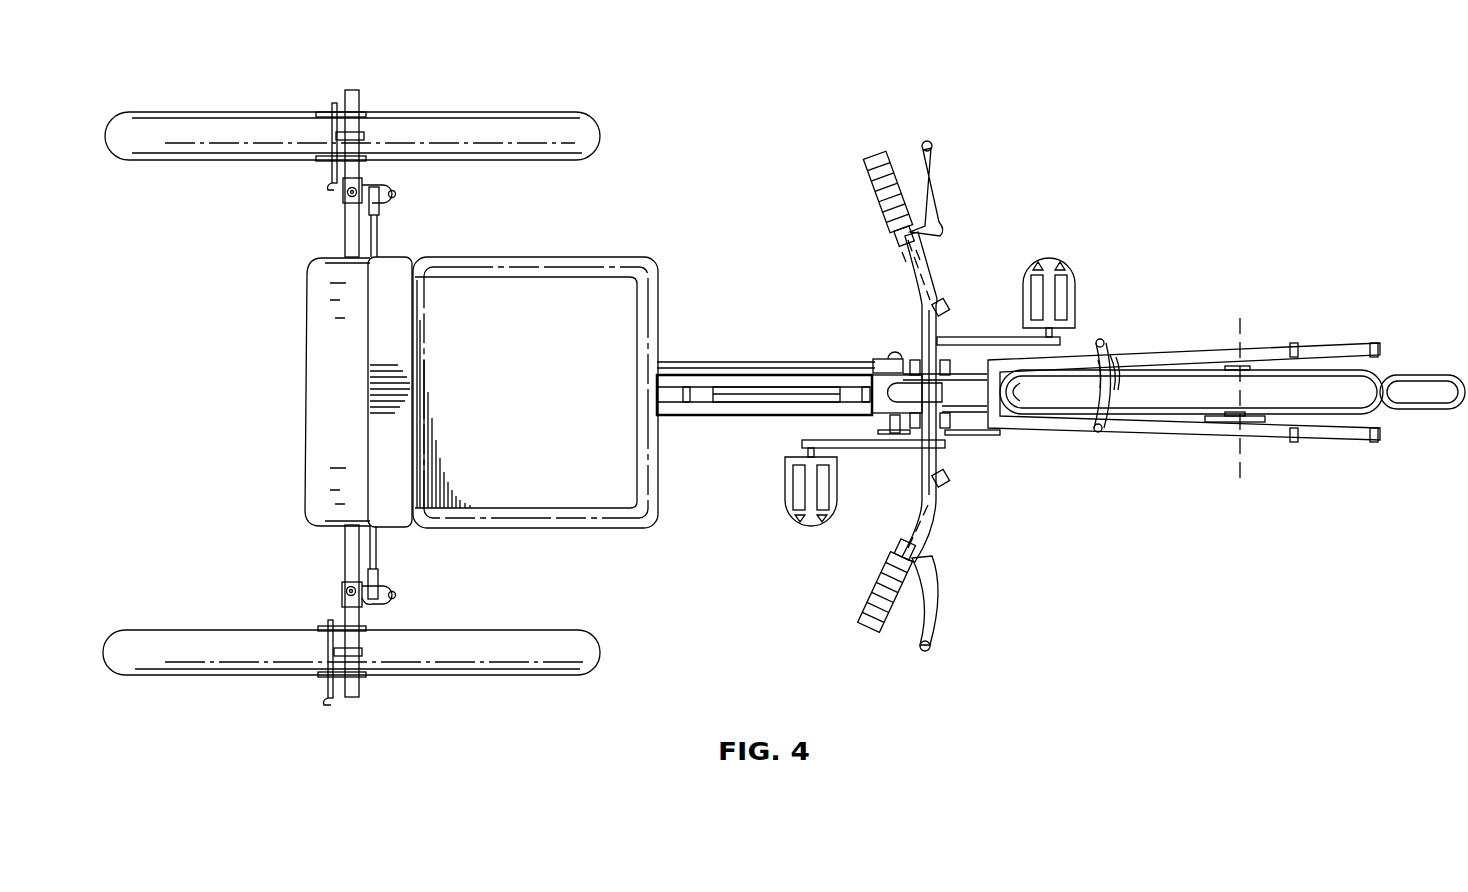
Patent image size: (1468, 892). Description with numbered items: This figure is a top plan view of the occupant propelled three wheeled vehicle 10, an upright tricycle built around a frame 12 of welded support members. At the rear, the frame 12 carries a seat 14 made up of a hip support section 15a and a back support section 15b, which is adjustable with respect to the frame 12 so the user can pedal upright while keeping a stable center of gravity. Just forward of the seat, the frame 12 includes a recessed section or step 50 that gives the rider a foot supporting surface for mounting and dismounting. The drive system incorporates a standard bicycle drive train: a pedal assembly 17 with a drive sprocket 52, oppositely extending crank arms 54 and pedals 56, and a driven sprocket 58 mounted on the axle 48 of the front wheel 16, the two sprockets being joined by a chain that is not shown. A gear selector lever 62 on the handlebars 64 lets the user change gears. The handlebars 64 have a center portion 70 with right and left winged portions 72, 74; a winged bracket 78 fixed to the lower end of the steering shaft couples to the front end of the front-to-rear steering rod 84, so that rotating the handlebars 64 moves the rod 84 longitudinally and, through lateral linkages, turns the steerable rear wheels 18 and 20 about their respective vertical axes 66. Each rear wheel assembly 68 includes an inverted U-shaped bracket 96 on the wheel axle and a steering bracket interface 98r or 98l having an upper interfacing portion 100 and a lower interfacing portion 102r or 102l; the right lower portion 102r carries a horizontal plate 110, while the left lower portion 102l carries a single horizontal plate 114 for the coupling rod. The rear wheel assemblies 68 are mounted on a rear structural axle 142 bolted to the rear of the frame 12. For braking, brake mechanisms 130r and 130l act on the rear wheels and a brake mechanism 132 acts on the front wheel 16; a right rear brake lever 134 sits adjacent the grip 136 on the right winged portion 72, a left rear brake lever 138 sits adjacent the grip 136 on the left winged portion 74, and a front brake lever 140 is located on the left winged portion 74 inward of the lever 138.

The occupant propelled three wheeled vehicle 10 is at (1178, 165).
The frame 12 is at (764, 392).
The seat 14 is at (435, 396).
The hip support section 15a is at (450, 518).
The back support section 15b is at (385, 445).
The front wheel 16 is at (1420, 385).
The pedal assembly 17 is at (940, 458).
The left rear wheel 18 is at (120, 162).
The right rear wheel 20 is at (128, 676).
The axle 48 is at (1243, 332).
The recessed section or step 50 is at (735, 382).
The drive sprocket 52 is at (972, 436).
The crank arms 54 is at (965, 337).
The pedals 56 is at (1052, 268).
The driven sprocket 58 is at (1262, 424).
The gear selector lever 62 is at (948, 482).
The handlebars 64 is at (918, 280).
The vertical axis 66 is at (343, 196).
The rear wheel assembly 68 is at (345, 100).
The center portion 70 is at (922, 340).
The right winged portion 72 is at (925, 520).
The left winged portion 74 is at (940, 262).
The winged bracket 78 is at (885, 358).
The front-to-rear steering rod 84 is at (775, 362).
The inverted U-shaped bracket 96 is at (362, 98).
The left steering bracket interface 98l is at (340, 215).
The right steering bracket interface 98r is at (333, 580).
The upper interfacing portion 100 is at (347, 192).
The lower interfacing portion 102l is at (396, 190).
The lower interfacing portion 102r is at (396, 597).
The horizontal plate 110 is at (380, 580).
The horizontal plate 114 is at (380, 205).
The left rear brake mechanism 130l is at (332, 105).
The right rear brake mechanism 130r is at (327, 700).
The front brake mechanism 132 is at (1090, 435).
The right rear brake lever 134 is at (940, 608).
The grip 136 is at (878, 200).
The left rear brake lever 138 is at (935, 166).
The front brake lever 140 is at (946, 298).
The rear structural axle 142 is at (345, 540).